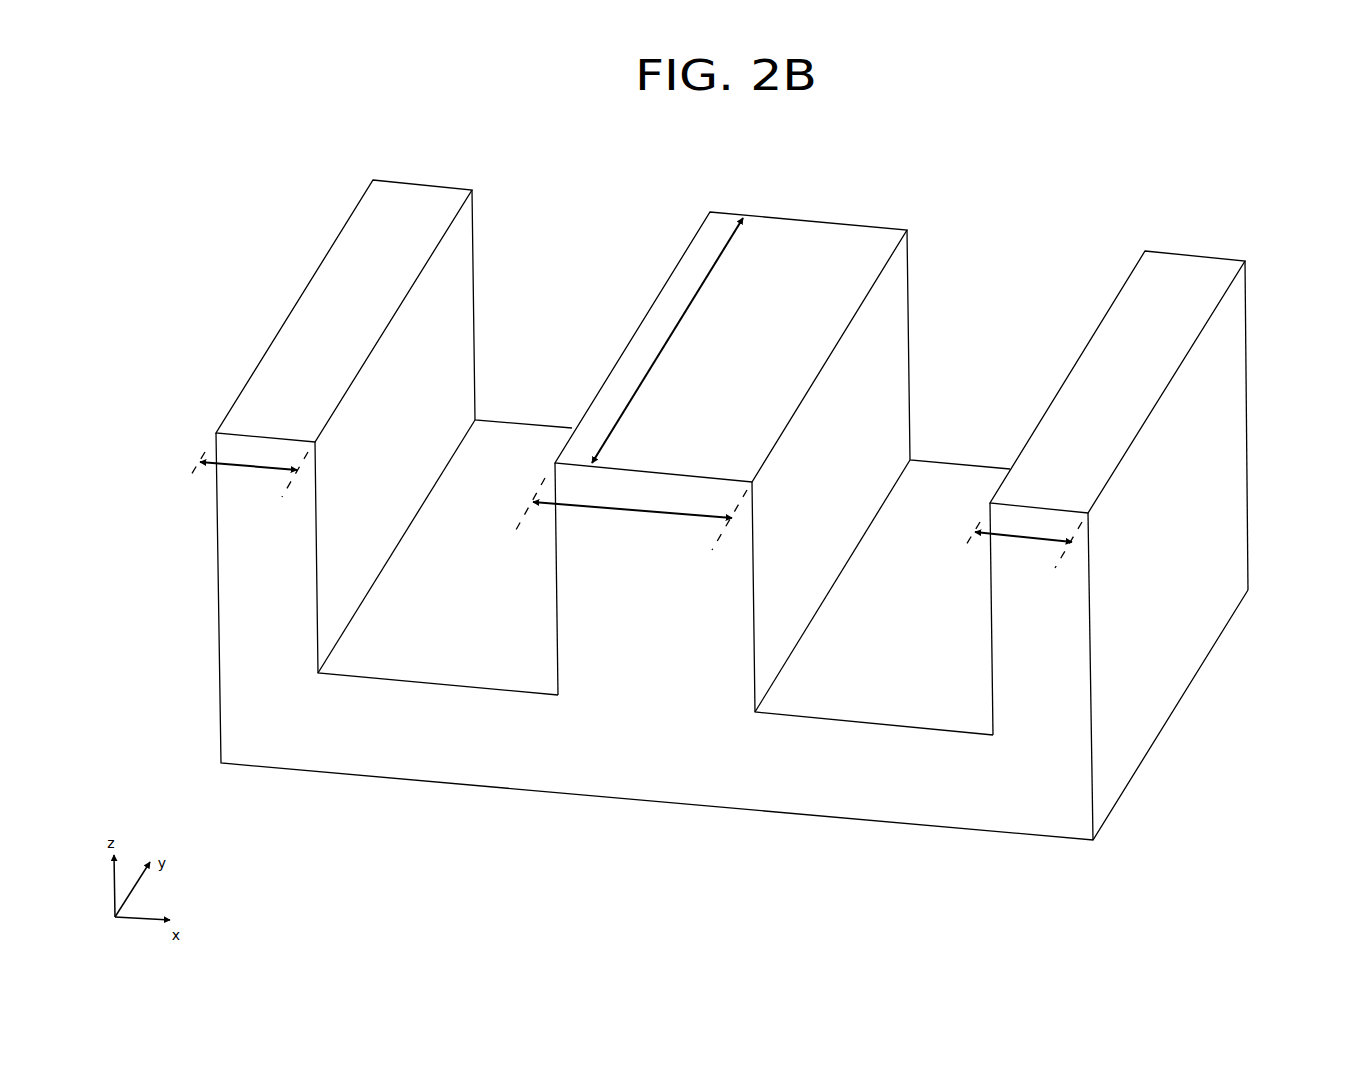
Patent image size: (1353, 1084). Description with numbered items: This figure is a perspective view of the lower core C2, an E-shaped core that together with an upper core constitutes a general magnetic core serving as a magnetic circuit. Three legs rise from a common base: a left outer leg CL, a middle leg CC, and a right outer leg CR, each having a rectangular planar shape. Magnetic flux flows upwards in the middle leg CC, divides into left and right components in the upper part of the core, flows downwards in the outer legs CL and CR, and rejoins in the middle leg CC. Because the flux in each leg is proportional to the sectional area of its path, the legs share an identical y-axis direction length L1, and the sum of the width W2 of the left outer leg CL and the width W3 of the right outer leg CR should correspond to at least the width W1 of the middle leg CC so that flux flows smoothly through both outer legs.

The lower core C2 is at (687, 505).
The left outer leg CL is at (240, 582).
The middle leg CC is at (890, 292).
The right outer leg CR is at (1227, 356).
The width of the middle leg W1 is at (629, 518).
The width of the left outer leg W2 is at (248, 475).
The width of the right outer leg W3 is at (1022, 548).
The y-axis direction length L1 is at (667, 340).